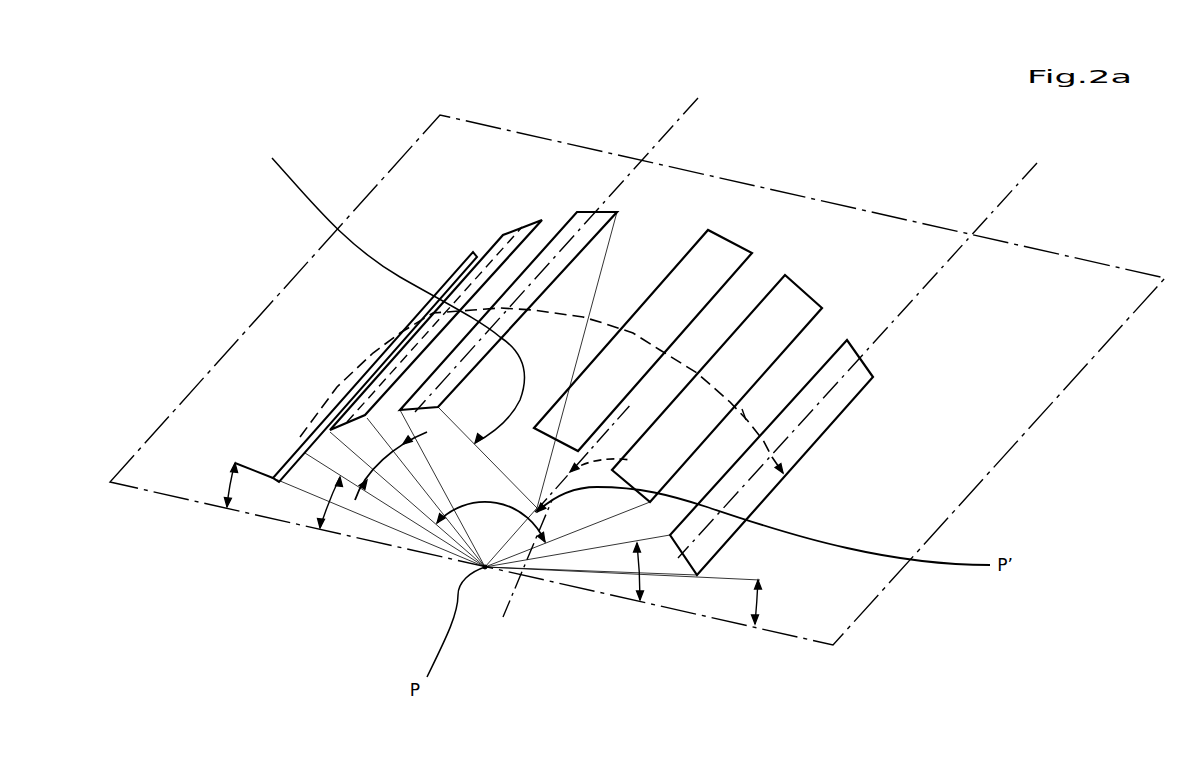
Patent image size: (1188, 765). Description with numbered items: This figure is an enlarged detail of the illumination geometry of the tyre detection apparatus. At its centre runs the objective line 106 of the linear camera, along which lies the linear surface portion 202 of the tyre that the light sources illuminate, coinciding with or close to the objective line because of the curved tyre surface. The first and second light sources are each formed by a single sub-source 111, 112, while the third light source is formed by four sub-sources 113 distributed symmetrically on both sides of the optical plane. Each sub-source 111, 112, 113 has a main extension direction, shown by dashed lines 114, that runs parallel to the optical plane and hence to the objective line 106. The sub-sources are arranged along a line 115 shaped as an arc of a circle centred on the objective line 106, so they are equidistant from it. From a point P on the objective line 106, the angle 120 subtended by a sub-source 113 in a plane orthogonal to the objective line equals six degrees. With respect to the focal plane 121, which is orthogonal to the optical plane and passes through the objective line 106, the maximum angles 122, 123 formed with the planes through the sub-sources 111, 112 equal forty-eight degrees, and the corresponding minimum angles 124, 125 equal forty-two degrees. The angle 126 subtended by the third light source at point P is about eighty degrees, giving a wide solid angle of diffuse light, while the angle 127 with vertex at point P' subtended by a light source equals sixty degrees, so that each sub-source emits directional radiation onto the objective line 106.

The objective line 106 is at (613, 423).
The sub-source 111 is at (305, 442).
The sub-source 112 is at (847, 370).
The sub-sources 113 is at (583, 223).
The main extension direction 114 is at (670, 131).
The line 115 is at (740, 413).
The angle 120 is at (382, 463).
The focal plane 121 is at (770, 188).
The maximum angle 122 is at (320, 507).
The maximum angle 123 is at (640, 578).
The minimum angle 124 is at (232, 487).
The minimum angle 125 is at (758, 602).
The angle 126 is at (478, 503).
The angle 127 is at (382, 289).
The linear surface portion 202 is at (503, 607).